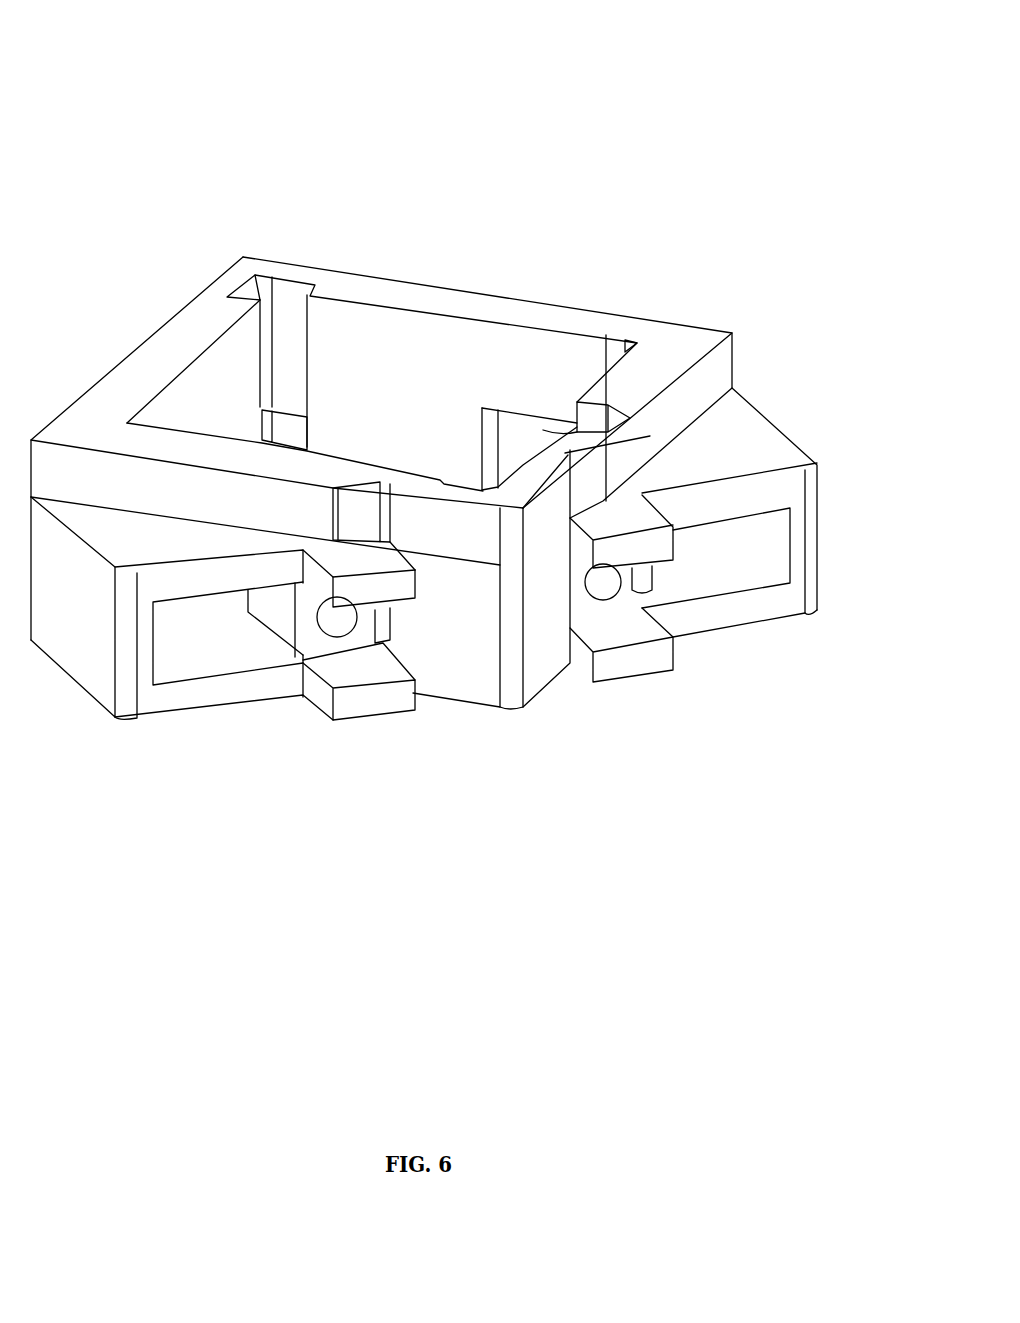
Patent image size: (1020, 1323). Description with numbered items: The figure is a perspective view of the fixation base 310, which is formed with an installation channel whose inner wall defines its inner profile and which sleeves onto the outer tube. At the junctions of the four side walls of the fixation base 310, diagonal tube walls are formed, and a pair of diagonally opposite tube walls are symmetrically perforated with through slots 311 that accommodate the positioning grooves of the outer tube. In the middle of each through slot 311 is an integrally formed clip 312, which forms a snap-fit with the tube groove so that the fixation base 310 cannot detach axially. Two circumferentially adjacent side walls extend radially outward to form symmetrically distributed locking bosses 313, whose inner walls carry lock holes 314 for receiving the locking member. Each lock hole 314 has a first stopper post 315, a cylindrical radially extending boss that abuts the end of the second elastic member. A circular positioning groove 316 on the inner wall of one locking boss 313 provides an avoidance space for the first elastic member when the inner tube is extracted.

The fixation base 310 is at (680, 103).
The through slot 311 is at (285, 320).
The clip 312 is at (290, 430).
The locking boss 313 is at (755, 445).
The lock hole 314 is at (217, 623).
The first stopper post 315 is at (352, 625).
The circular positioning groove 316 is at (595, 423).